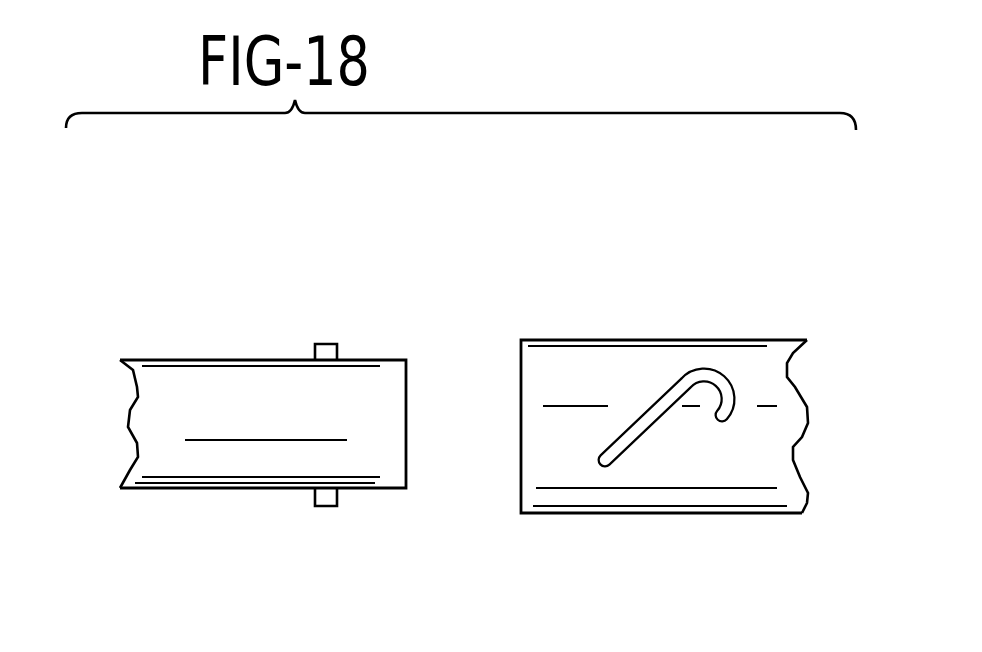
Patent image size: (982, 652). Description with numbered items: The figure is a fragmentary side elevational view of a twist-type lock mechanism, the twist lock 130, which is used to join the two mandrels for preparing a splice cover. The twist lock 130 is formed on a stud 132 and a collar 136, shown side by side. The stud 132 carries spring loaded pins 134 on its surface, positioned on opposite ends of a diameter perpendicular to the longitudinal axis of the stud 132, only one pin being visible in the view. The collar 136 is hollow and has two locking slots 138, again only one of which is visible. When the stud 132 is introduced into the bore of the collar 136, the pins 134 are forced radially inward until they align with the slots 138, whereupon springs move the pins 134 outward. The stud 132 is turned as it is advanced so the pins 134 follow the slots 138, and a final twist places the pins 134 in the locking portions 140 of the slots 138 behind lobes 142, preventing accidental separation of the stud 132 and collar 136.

The twist lock 130 is at (472, 286).
The stud 132 is at (265, 360).
The spring loaded pins 134 is at (327, 344).
The collar 136 is at (553, 340).
The locking slots 138 is at (661, 398).
The locking portions 140 is at (735, 396).
The lobes 142 is at (727, 405).